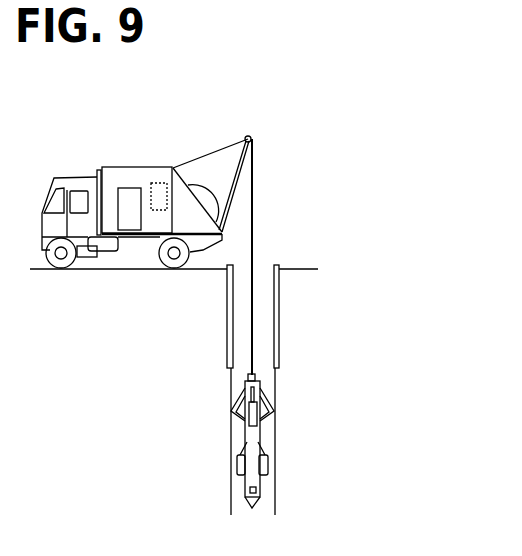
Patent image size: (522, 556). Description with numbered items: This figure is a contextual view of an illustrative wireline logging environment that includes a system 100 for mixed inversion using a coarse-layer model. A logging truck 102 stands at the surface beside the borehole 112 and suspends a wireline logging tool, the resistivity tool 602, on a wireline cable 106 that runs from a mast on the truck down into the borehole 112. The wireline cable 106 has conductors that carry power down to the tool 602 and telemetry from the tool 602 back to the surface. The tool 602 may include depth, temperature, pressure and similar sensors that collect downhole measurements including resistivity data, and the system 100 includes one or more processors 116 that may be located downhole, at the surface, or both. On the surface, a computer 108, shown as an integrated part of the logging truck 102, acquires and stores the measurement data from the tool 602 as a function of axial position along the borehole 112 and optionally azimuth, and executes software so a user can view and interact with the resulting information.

The system 100 is at (283, 438).
The logging truck 102 is at (113, 166).
The wireline cable 106 is at (253, 264).
The computer 108 is at (162, 183).
The borehole 112 is at (230, 373).
The processors 116 is at (260, 488).
The resistivity tool 602 is at (248, 487).